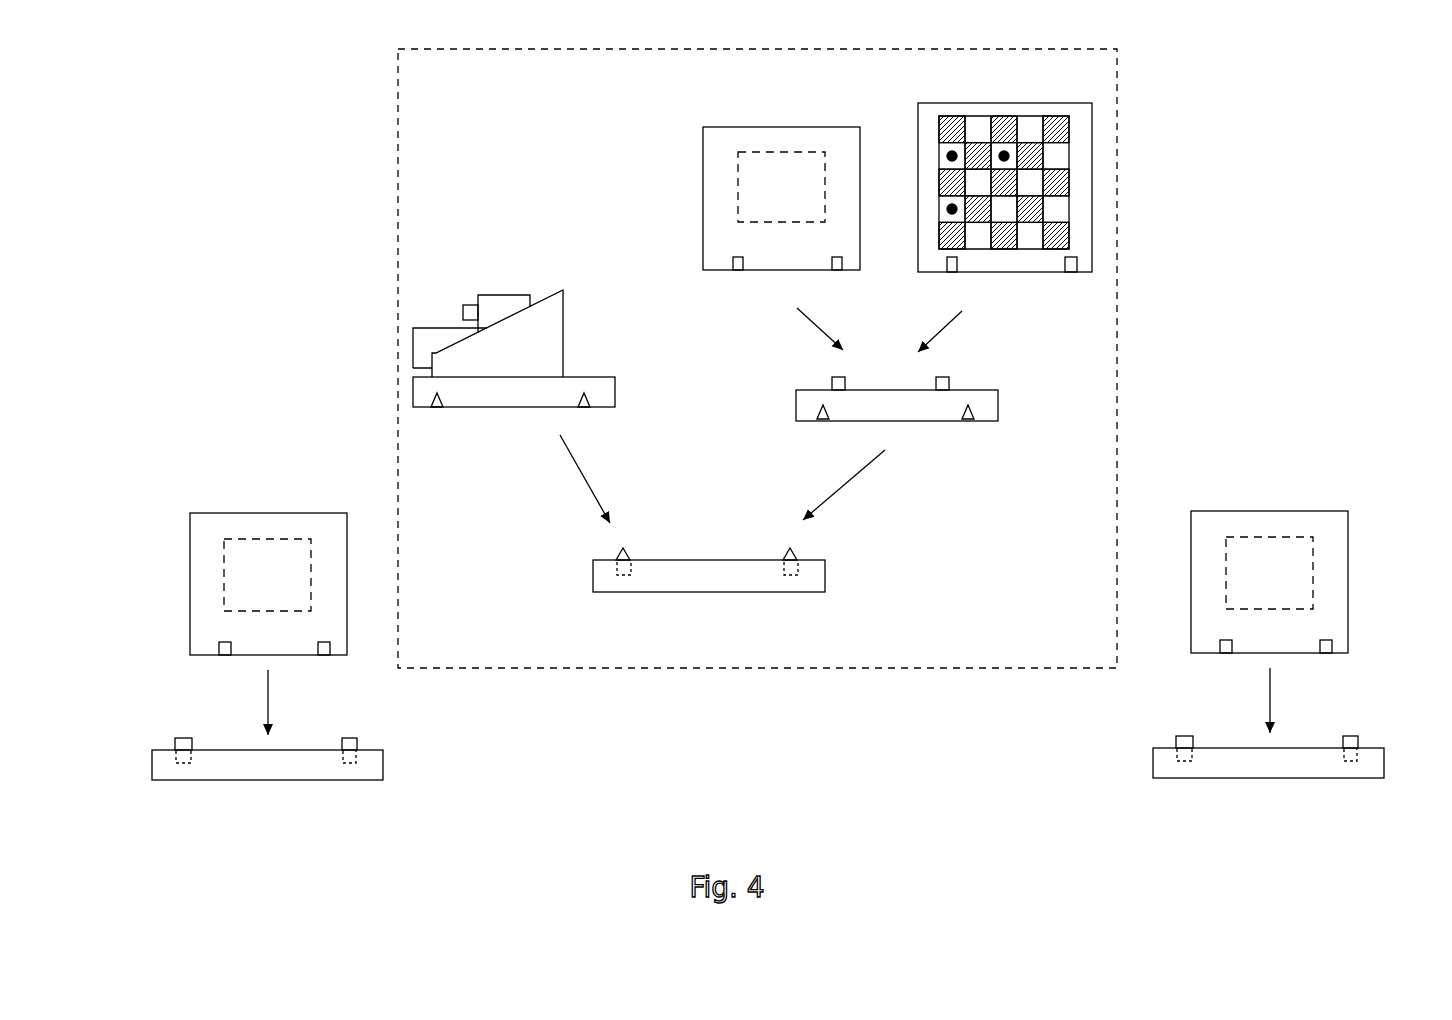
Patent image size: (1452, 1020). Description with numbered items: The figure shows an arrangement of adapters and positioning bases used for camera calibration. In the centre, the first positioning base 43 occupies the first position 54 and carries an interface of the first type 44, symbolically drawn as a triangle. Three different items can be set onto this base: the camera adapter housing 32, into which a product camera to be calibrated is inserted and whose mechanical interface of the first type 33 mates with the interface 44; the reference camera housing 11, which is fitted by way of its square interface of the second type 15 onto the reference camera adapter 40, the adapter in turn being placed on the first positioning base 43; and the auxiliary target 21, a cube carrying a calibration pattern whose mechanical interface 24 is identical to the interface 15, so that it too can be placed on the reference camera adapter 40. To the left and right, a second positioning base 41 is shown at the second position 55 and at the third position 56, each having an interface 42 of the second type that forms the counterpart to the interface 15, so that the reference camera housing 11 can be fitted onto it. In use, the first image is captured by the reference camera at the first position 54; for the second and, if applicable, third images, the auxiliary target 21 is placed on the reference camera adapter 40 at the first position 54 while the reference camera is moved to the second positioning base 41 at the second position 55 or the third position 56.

The reference camera housing 11 is at (712, 127).
The interface of the second type 15 is at (735, 258).
The auxiliary target 21 is at (1003, 108).
The mechanical interface 24 is at (948, 260).
The housing 32 is at (563, 298).
The mechanical interface of a first interface type 33 is at (584, 393).
The reference camera adapter 40 is at (980, 390).
The second positioning base 41 is at (373, 747).
The interface 42 is at (185, 737).
The first positioning base 43 is at (817, 550).
The interface of the first type 44 is at (790, 548).
The first position 54 is at (740, 573).
The second position 55 is at (267, 763).
The third position 56 is at (1186, 735).